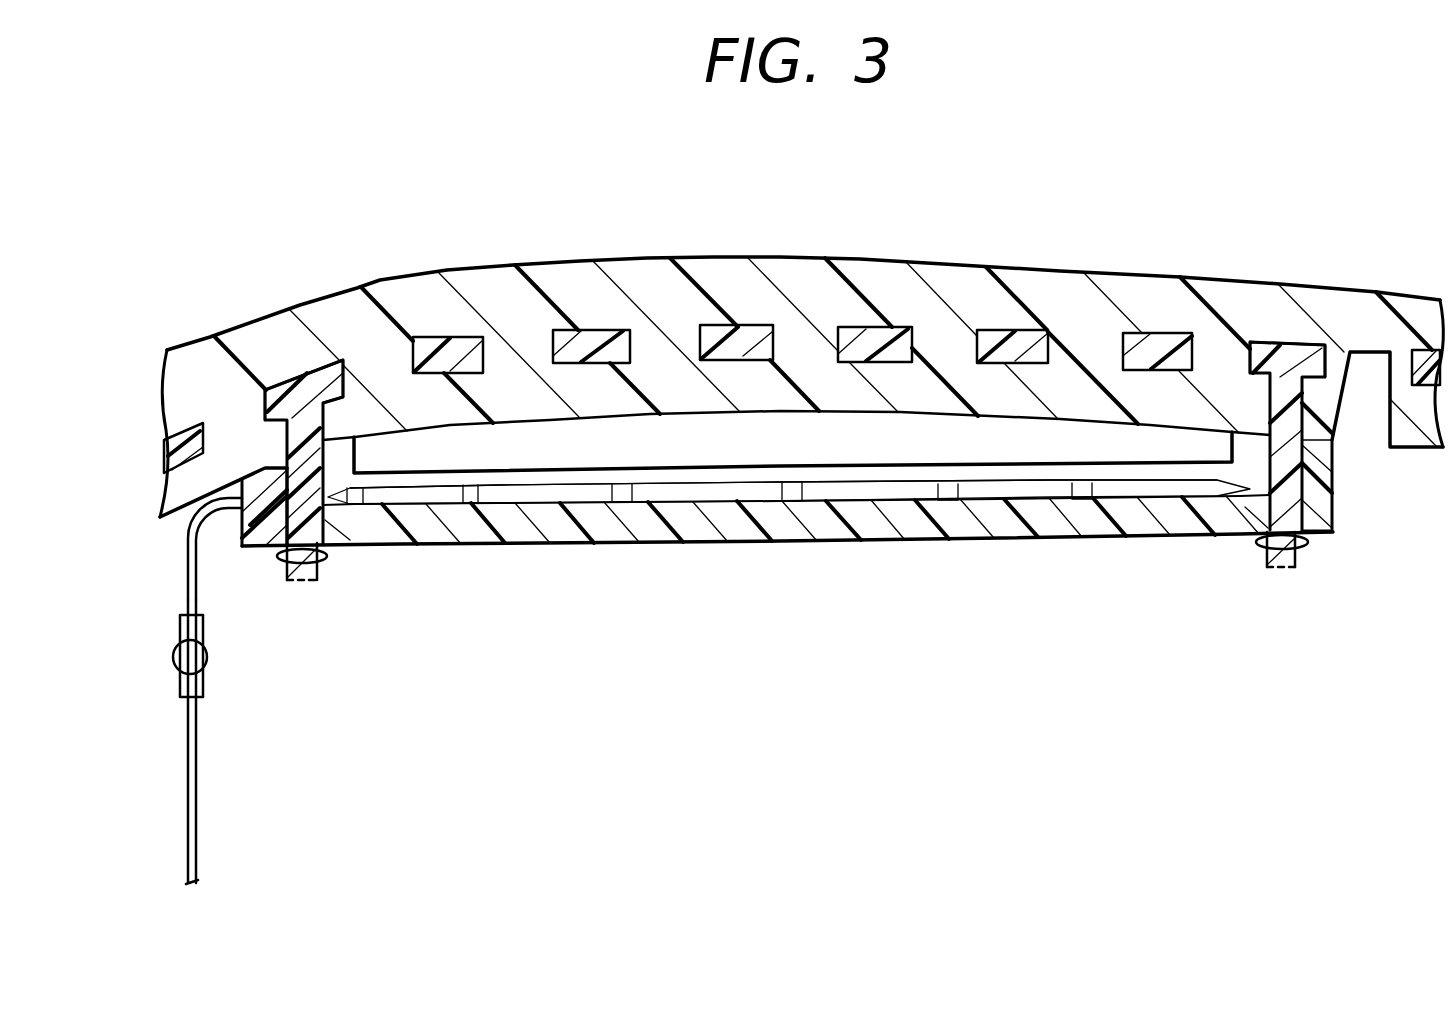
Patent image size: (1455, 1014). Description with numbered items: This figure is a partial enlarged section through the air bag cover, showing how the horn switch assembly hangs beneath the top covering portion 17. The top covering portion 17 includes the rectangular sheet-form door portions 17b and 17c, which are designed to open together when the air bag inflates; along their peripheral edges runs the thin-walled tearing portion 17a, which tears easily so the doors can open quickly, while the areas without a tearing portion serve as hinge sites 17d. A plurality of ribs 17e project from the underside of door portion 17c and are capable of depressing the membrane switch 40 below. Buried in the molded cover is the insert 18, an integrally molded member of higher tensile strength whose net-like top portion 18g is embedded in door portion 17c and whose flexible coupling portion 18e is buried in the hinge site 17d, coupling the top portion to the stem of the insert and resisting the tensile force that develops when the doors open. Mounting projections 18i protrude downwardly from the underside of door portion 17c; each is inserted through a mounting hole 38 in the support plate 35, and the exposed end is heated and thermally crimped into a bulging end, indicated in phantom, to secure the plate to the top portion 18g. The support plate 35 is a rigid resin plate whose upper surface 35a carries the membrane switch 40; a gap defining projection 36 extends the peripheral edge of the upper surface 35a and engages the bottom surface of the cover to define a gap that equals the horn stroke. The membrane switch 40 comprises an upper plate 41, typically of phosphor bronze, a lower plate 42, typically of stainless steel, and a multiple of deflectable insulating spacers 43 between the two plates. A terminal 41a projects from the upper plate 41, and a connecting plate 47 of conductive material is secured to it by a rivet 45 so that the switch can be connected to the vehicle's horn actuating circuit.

The top covering portion 17 is at (1228, 273).
The tearing portion 17a is at (1361, 323).
The door portion 17b is at (1427, 296).
The door portion 17c is at (795, 260).
The hinge site 17d is at (200, 378).
The rib 17e is at (650, 428).
The insert 18 is at (987, 328).
The net-like top portion 18g is at (926, 355).
The flexible coupling portion 18e is at (156, 440).
The mounting projection 18i is at (328, 562).
The gap defining projection 36 is at (261, 485).
The mounting hole 38 is at (358, 522).
The support plate 35 is at (741, 528).
The upper surface 35a is at (796, 503).
The membrane switch 40 is at (1063, 622).
The upper plate 41 is at (1026, 483).
The lower plate 42 is at (985, 497).
The insulating spacer 43 is at (621, 492).
The terminal 41a is at (186, 565).
The rivet 45 is at (173, 657).
The connecting plate 47 is at (203, 722).